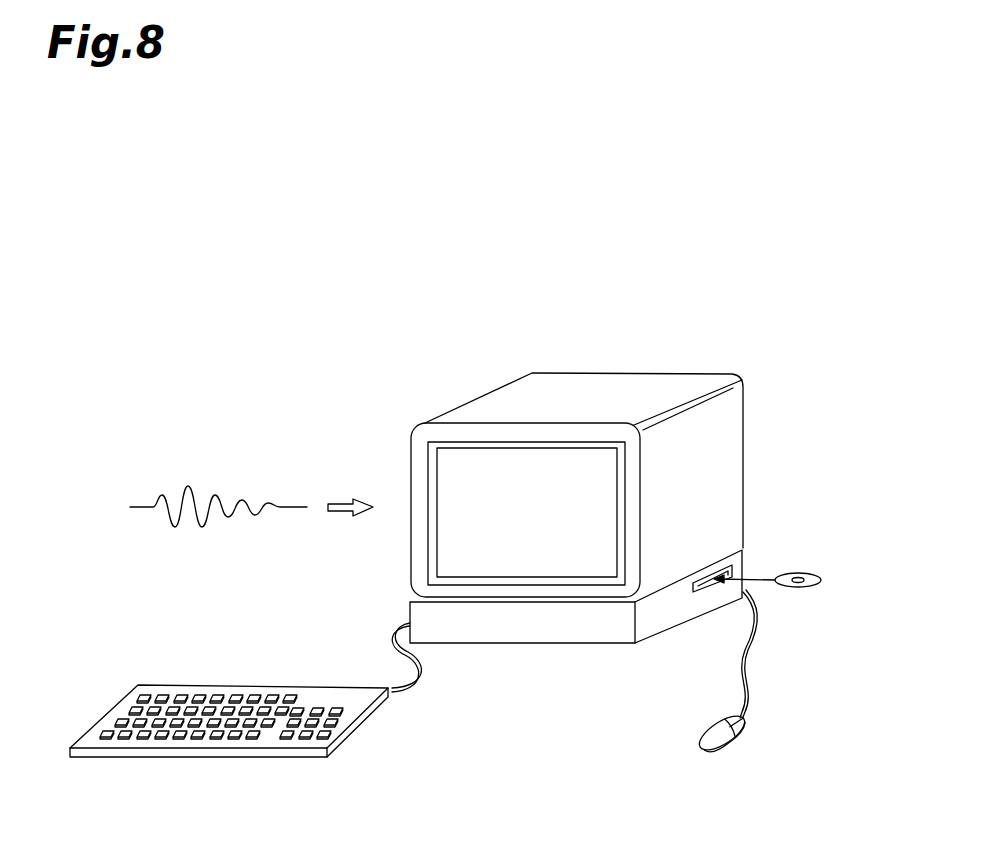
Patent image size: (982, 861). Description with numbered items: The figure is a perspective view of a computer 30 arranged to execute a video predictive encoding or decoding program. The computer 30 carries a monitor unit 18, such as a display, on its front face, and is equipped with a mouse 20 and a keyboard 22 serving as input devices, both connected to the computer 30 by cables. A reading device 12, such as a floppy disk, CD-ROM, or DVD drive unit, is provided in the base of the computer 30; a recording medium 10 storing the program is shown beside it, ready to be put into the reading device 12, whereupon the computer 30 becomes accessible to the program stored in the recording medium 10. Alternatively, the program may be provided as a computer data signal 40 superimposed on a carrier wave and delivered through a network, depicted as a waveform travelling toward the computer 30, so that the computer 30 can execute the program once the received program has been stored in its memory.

The recording medium 10 is at (797, 589).
The reading device 12 is at (702, 591).
The monitor unit 18 is at (443, 494).
The mouse 20 is at (711, 752).
The keyboard 22 is at (293, 684).
The computer 30 is at (488, 377).
The computer data signal 40 is at (186, 481).